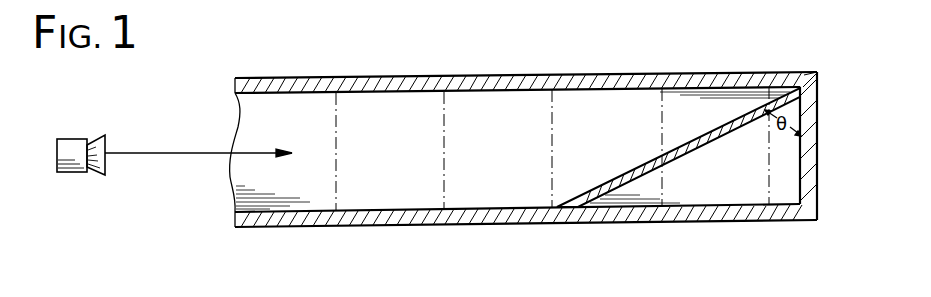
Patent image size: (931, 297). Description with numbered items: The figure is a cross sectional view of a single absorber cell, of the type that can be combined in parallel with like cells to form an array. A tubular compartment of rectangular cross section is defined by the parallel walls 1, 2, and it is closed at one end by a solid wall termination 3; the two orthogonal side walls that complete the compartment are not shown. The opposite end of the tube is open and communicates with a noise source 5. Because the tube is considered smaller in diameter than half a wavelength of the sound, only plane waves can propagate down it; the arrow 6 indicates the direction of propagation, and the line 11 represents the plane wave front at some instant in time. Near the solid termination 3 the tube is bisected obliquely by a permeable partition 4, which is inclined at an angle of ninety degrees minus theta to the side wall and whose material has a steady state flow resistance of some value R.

The wall 1 is at (490, 224).
The wall 2 is at (603, 72).
The solid wall termination 3 is at (818, 146).
The permeable partition 4 is at (615, 178).
The noise source 5 is at (71, 139).
The arrow 6 is at (171, 153).
The plane wave front 11 is at (664, 110).